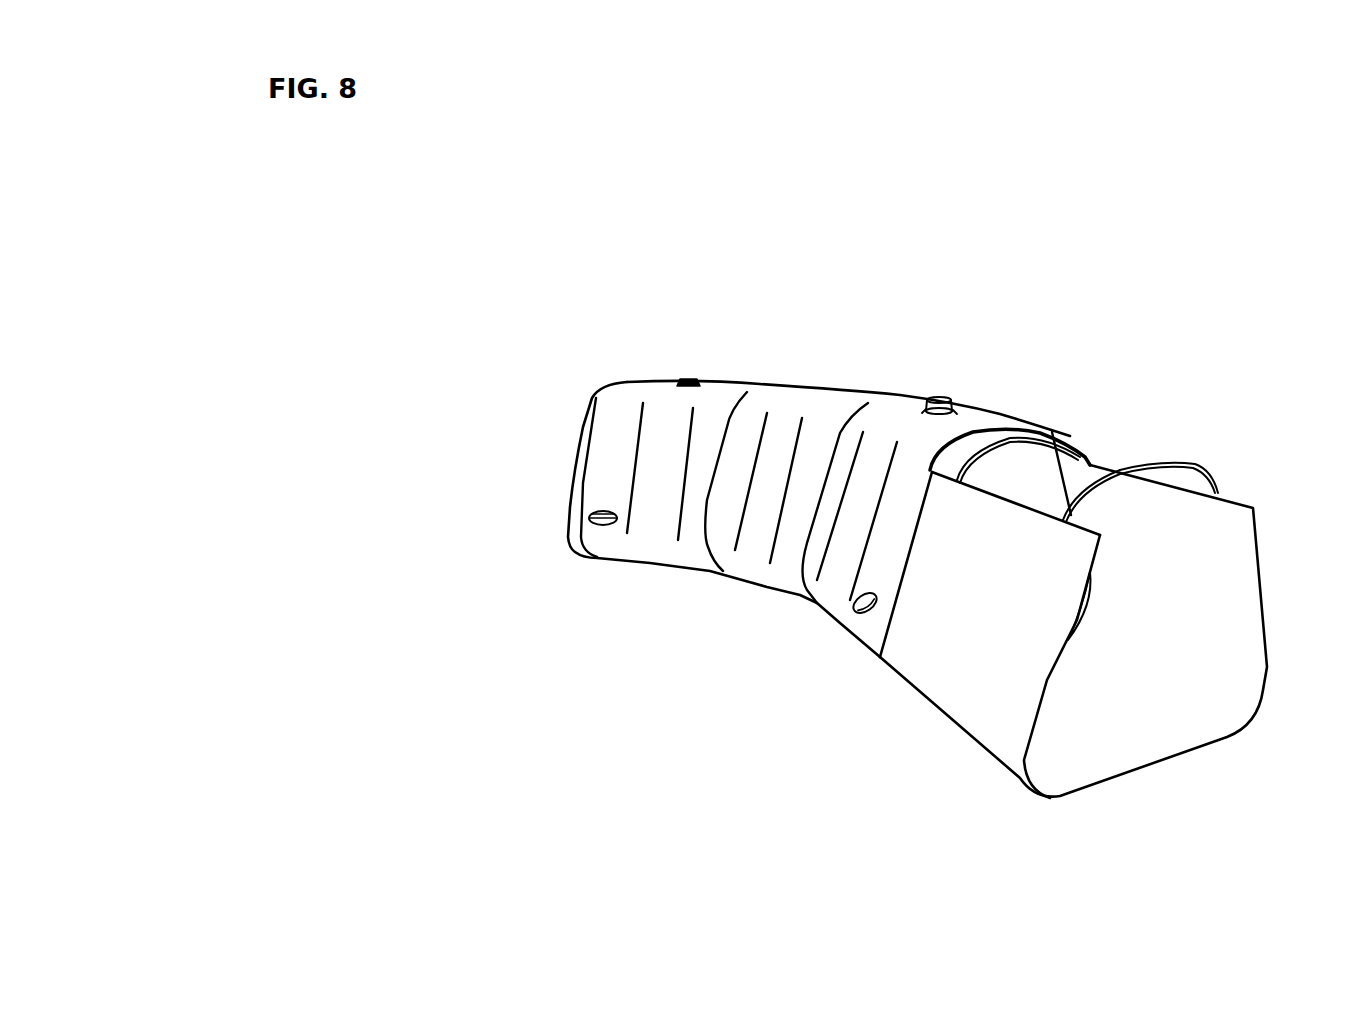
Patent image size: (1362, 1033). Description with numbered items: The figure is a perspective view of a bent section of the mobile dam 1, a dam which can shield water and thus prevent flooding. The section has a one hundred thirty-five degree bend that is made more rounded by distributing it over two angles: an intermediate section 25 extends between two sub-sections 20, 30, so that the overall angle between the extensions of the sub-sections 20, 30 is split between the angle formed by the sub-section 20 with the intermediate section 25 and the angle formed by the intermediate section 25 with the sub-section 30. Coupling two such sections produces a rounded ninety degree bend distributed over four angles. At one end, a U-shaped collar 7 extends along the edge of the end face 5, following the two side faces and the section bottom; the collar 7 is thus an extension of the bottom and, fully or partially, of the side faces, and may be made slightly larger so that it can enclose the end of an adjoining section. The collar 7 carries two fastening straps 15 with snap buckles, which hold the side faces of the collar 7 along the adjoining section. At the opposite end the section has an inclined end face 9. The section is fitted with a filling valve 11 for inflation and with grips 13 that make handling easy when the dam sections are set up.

The mobile dam 1 is at (939, 258).
The end face 5 is at (1022, 457).
The collar 7 is at (1227, 603).
The inclined end face 9 is at (572, 537).
The filling valve 11 is at (948, 397).
The grips 13 is at (605, 530).
The fastening straps 15 is at (1068, 430).
The sub-section 20 is at (835, 578).
The intermediate section 25 is at (793, 407).
The sub-section 30 is at (662, 405).